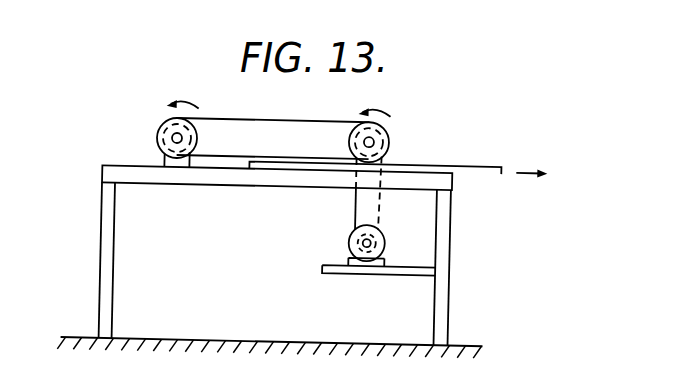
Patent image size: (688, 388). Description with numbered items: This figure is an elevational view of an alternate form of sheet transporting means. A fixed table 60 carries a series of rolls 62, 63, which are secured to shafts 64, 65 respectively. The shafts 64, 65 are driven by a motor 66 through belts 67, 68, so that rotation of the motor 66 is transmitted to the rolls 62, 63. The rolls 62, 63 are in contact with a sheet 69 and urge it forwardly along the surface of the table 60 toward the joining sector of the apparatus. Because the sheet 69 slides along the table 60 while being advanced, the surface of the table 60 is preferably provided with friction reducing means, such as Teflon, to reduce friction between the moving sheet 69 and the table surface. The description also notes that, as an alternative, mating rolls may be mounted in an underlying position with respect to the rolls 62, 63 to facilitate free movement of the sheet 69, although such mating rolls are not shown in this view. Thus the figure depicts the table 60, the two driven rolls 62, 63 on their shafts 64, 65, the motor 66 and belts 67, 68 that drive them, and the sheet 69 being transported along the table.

The fixed table 60 is at (103, 264).
The roll 62 is at (386, 128).
The roll 63 is at (164, 124).
The shaft 64 is at (375, 138).
The shaft 65 is at (172, 138).
The motor 66 is at (350, 239).
The belt 67 is at (382, 206).
The belt 68 is at (252, 118).
The sheet 69 is at (469, 160).